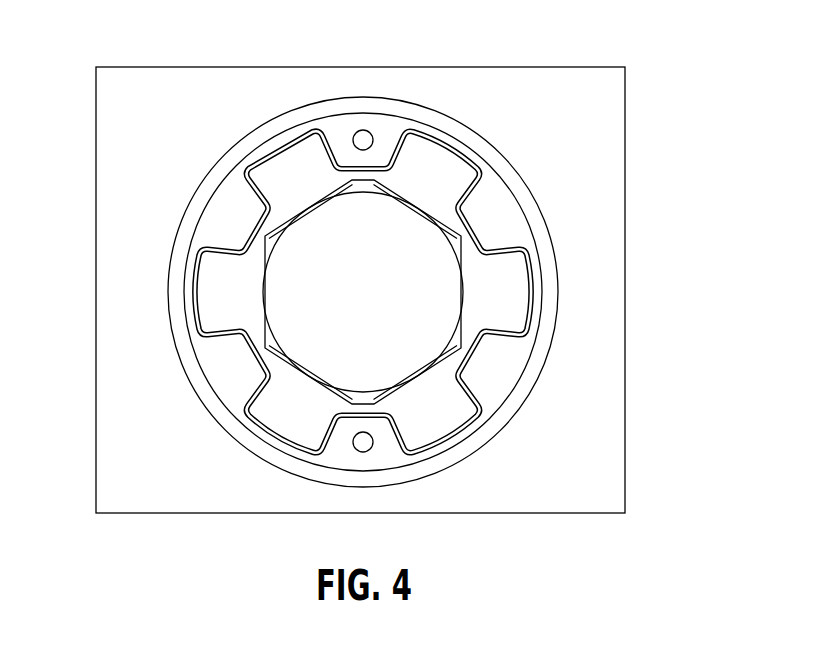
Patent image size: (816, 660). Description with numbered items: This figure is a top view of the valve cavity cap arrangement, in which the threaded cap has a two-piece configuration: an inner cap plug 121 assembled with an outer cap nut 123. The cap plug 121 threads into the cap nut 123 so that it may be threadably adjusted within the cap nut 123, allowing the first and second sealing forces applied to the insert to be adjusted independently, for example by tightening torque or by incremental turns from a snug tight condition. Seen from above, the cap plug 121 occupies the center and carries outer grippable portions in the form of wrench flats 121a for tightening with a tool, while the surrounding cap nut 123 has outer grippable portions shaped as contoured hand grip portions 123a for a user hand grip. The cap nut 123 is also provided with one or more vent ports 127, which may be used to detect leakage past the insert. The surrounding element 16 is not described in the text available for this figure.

The housing 16 is at (575, 155).
The cap plug 121 is at (410, 333).
The wrench flats 121a is at (297, 198).
The cap nut 123 is at (520, 303).
The contoured hand grip portions 123a is at (227, 223).
The vent ports 127 is at (358, 147).